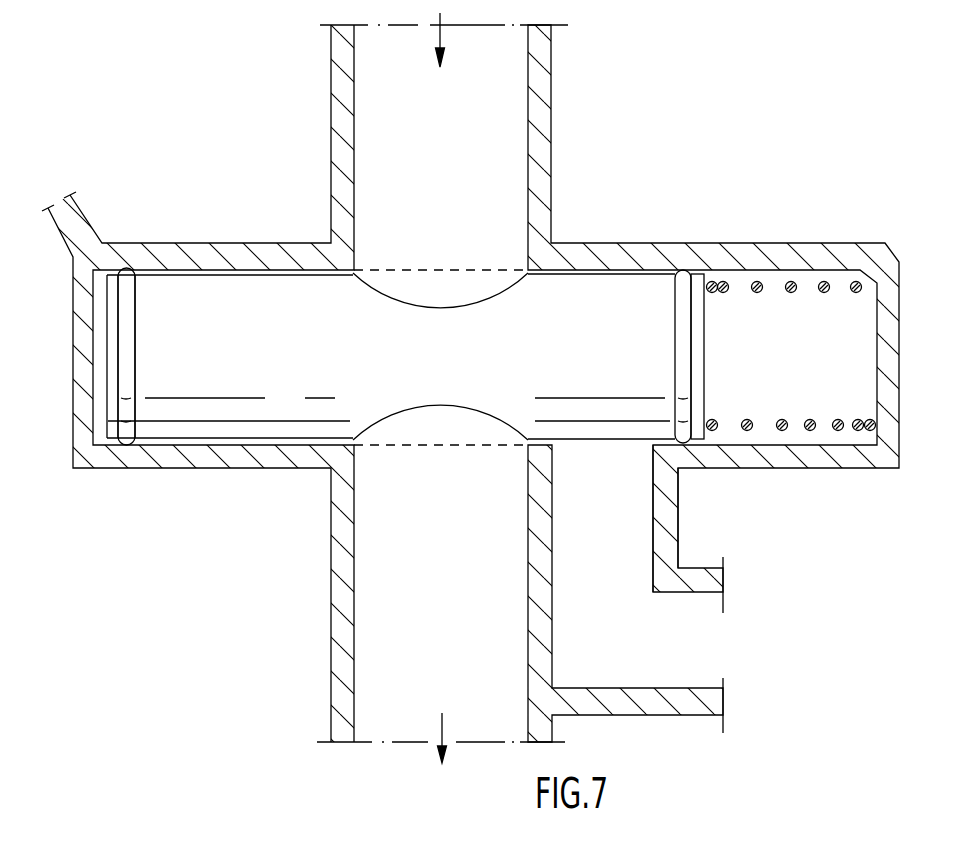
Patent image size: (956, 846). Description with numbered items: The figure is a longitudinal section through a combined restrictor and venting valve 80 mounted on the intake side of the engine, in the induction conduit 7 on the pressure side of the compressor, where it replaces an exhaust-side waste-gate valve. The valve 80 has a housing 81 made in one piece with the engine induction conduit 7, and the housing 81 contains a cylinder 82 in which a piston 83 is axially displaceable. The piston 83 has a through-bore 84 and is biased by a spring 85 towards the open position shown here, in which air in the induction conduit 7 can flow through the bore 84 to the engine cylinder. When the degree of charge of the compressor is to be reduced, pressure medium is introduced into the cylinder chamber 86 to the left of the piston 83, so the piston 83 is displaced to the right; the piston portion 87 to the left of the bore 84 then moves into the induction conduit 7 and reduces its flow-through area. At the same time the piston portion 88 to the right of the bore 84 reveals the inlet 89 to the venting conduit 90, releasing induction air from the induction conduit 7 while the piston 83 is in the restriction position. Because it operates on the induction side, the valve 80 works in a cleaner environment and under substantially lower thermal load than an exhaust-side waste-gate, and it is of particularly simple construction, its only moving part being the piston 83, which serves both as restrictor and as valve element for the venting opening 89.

The induction conduit 7 is at (545, 90).
The combined restrictor and venting valve 80 is at (228, 487).
The housing 81 is at (150, 243).
The cylinder 82 is at (217, 268).
The piston 83 is at (175, 446).
The through-bore 84 is at (427, 405).
The spring 85 is at (810, 430).
The cylinder chamber 86 is at (95, 419).
The piston portion 87 is at (300, 425).
The piston portion 88 is at (578, 293).
The inlet 89 is at (597, 447).
The venting conduit 90 is at (693, 597).